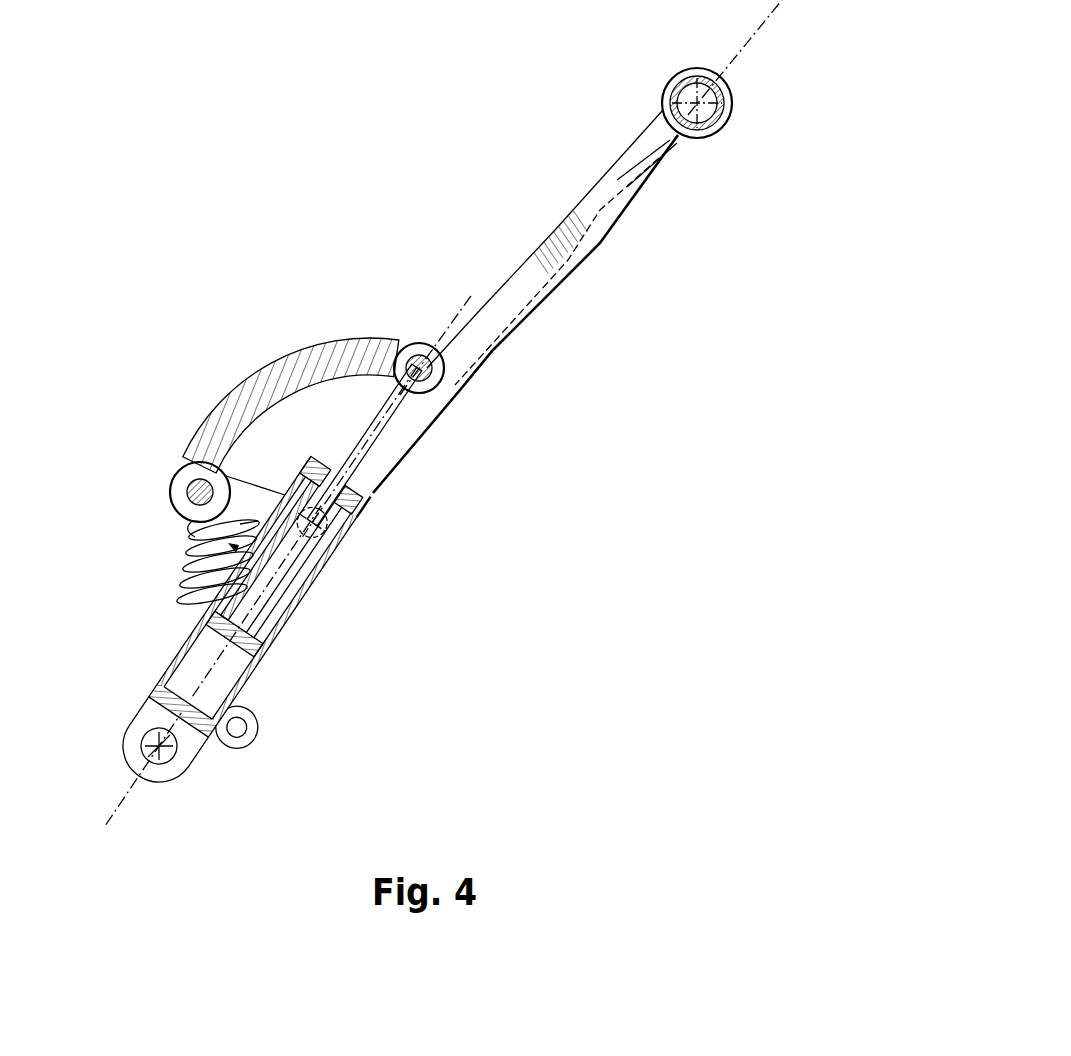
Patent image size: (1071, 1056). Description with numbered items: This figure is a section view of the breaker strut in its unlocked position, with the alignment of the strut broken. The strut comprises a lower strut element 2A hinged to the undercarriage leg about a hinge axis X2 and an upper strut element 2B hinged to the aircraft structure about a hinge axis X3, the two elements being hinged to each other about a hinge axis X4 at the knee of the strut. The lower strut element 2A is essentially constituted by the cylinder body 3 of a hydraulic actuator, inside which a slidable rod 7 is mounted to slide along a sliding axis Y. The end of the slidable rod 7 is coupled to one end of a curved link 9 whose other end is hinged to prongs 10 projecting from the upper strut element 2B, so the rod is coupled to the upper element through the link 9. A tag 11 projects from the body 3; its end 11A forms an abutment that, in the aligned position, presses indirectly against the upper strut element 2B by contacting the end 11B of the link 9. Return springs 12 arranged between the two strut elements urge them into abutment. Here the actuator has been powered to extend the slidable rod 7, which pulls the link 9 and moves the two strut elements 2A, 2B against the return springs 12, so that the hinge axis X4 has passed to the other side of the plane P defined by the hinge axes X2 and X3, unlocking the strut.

The lower strut element 2A is at (143, 721).
The upper strut element 2B is at (576, 219).
The cylinder body 3 is at (258, 644).
The slidable rod 7 is at (362, 438).
The link 9 is at (301, 351).
The prongs 10 is at (258, 493).
The tag 11 is at (298, 594).
The end of the tag 11A is at (197, 563).
The end of the link 11B is at (168, 490).
The return springs 12 is at (205, 600).
The hinge axis X2 is at (168, 760).
The hinge axis X3 is at (731, 100).
The hinge axis X4 is at (333, 540).
The sliding axis Y is at (472, 292).
The plane P is at (760, 46).